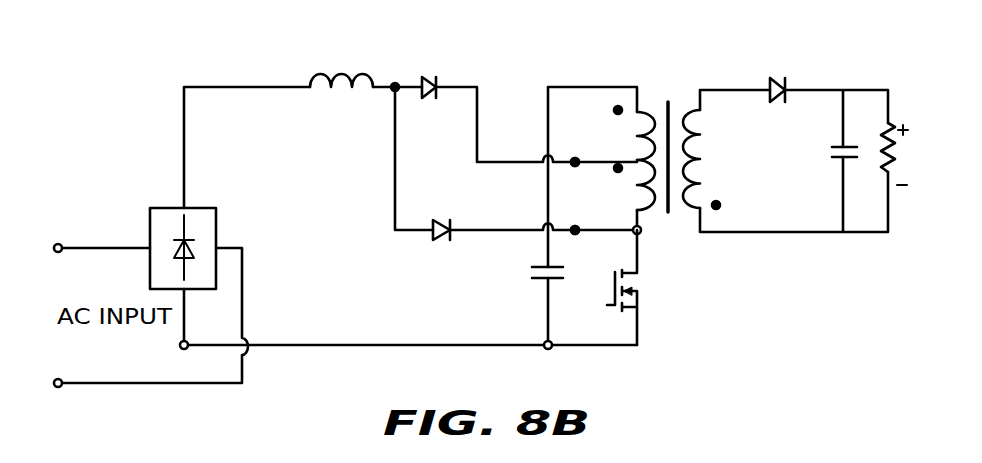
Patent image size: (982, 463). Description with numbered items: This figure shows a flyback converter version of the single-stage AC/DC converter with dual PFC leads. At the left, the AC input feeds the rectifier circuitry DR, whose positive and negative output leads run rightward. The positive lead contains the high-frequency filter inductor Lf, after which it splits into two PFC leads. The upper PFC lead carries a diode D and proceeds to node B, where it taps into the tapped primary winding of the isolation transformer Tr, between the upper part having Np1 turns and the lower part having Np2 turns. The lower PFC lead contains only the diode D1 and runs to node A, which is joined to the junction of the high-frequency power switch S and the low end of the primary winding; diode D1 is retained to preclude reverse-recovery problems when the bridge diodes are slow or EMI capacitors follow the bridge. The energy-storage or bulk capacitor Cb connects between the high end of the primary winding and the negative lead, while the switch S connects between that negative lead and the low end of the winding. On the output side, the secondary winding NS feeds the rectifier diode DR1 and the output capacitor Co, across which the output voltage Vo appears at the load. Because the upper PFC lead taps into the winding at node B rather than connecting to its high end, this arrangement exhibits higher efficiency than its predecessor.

The filter inductor Lf is at (341, 62).
The diode D is at (431, 68).
The diode D1 is at (452, 245).
The rectifier circuitry DR is at (183, 235).
The output rectifier diode DR1 is at (780, 74).
The isolation transformer Tr is at (658, 136).
The upper part of the tapped primary winding Np1 is at (620, 133).
The lower part of the tapped primary winding Np2 is at (616, 185).
The secondary winding NS is at (711, 159).
The energy-storage capacitor Cb is at (543, 283).
The output capacitor Co is at (826, 169).
The high-frequency power switch S is at (632, 287).
The output voltage / load Vo is at (902, 154).
The node A is at (575, 230).
The node B is at (575, 159).